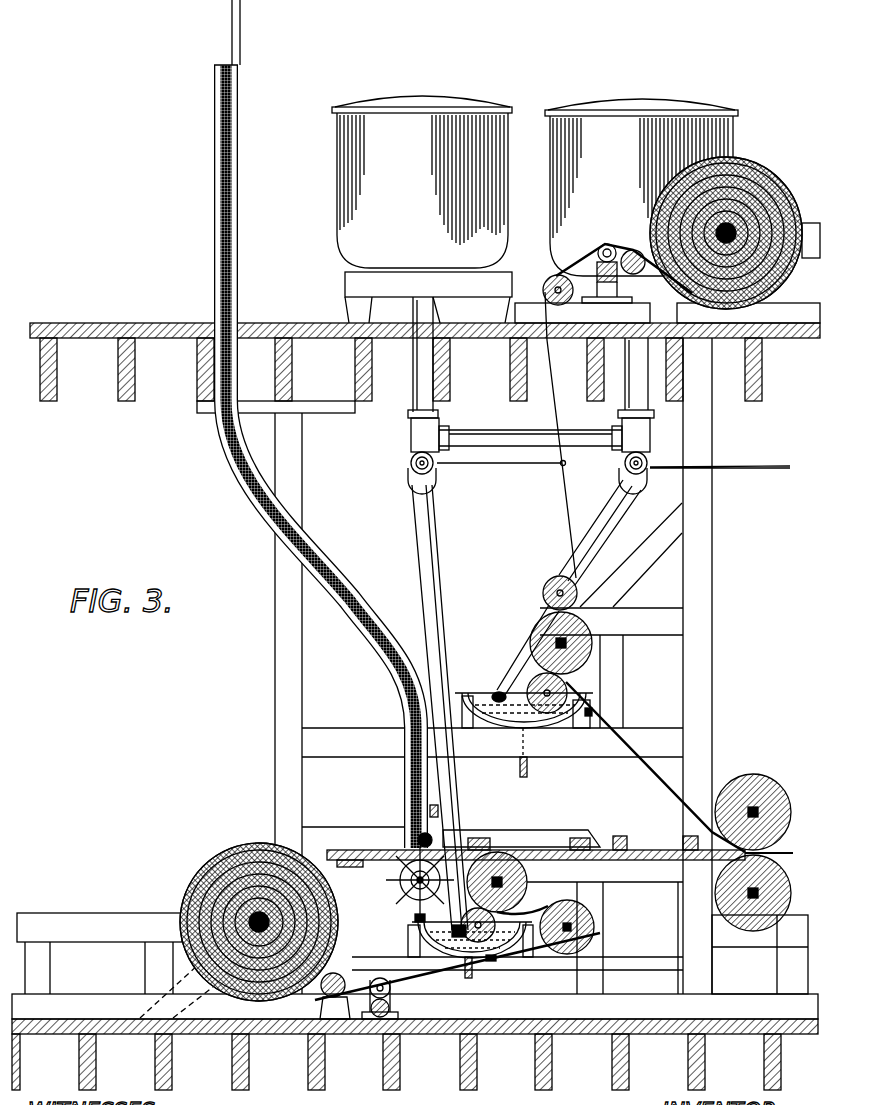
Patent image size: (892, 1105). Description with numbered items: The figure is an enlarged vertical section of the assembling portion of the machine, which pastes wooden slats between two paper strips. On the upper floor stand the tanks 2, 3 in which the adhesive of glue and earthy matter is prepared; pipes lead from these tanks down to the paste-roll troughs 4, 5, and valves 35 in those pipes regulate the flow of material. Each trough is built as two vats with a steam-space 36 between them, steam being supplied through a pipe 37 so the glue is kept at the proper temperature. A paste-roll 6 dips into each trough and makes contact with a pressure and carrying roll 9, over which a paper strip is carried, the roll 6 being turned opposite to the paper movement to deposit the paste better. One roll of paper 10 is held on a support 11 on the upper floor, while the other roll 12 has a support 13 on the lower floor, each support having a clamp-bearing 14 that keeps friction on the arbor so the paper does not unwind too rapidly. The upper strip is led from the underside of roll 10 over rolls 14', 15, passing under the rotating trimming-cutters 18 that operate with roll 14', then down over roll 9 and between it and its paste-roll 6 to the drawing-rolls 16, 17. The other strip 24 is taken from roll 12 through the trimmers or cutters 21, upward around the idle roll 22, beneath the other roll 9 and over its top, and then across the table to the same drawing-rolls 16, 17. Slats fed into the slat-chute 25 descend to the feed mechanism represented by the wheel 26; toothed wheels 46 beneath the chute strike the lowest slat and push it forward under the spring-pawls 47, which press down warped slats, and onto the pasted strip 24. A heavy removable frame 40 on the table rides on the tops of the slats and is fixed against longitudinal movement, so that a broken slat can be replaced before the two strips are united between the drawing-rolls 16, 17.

The tank 2 is at (535, 186).
The tank 3 is at (604, 244).
The paste-roll trough 4 is at (492, 961).
The paste-roll trough 5 is at (500, 697).
The paste-roll 6 is at (567, 690).
The pressure and carrying roll 9 is at (588, 636).
The roll of paper 10 is at (768, 178).
The support 11 is at (812, 223).
The roll of paper 12 is at (204, 867).
The support 13 is at (99, 952).
The clamp-bearing 14 is at (247, 873).
The roll 14' is at (625, 251).
The roll 15 is at (543, 294).
The drawing-roll 16 is at (753, 778).
The drawing-roll 17 is at (756, 934).
The rotating trimming-cutters 18 is at (599, 256).
The trimmers or cutters 21 is at (380, 978).
The idle roll 22 is at (595, 927).
The paper strip 24 is at (546, 903).
The slat-chute 25 is at (213, 237).
The feed wheel 26 is at (399, 880).
The valve 35 is at (437, 475).
The steam-space 36 is at (548, 724).
The pipe 37 is at (528, 774).
The frame 40 is at (643, 850).
The toothed wheel 46 is at (418, 918).
The spring-pawl 47 is at (413, 838).